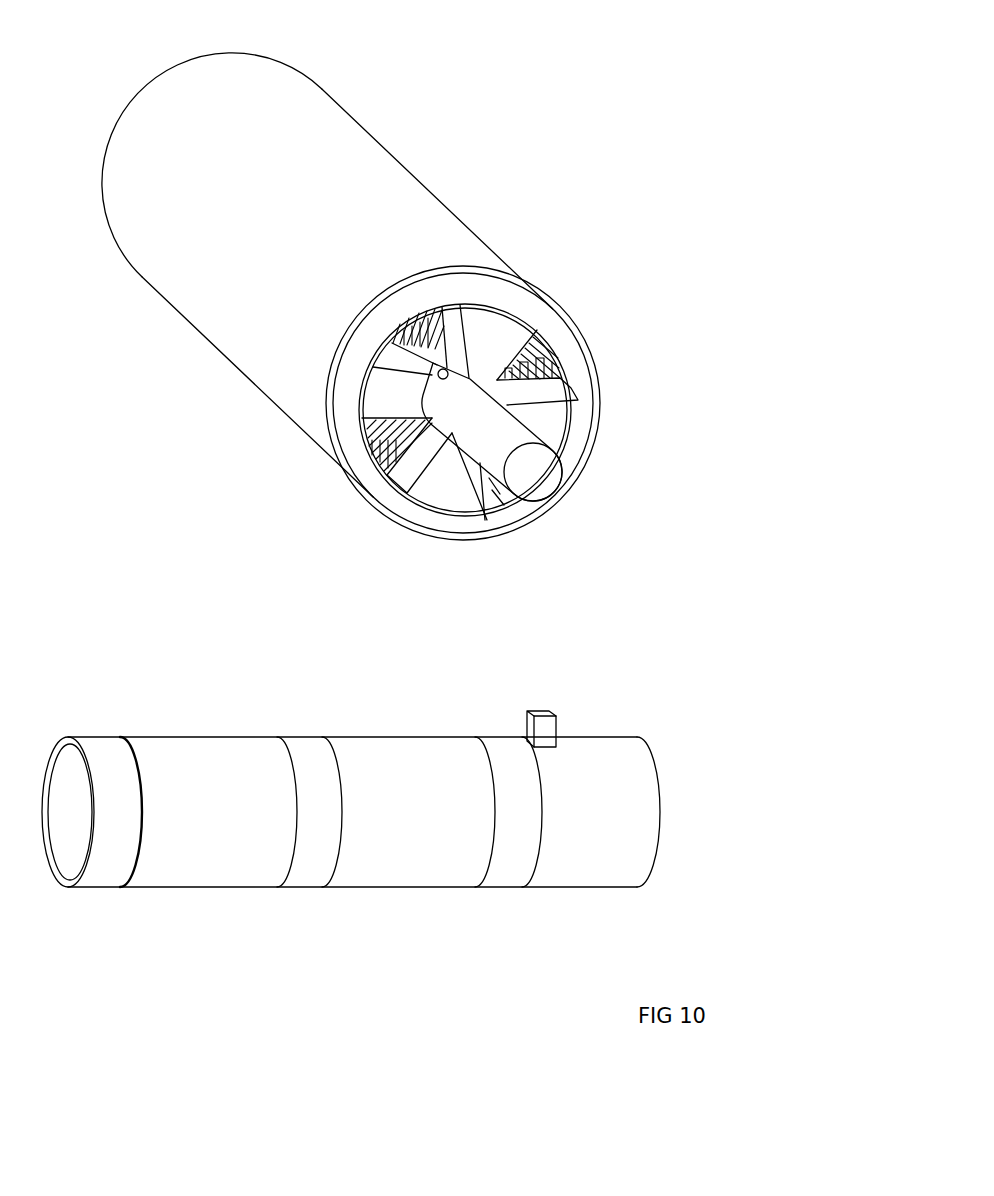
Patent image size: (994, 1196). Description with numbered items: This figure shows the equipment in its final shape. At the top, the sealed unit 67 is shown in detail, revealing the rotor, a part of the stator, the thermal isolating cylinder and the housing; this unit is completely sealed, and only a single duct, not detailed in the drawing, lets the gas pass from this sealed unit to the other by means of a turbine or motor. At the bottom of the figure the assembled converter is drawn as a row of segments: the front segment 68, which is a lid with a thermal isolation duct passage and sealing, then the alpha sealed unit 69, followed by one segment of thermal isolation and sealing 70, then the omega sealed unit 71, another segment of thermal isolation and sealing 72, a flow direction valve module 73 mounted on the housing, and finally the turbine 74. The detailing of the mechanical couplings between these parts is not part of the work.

The sealed unit 67 is at (351, 296).
The front segment 68 is at (100, 750).
The alpha sealed unit 69 is at (208, 748).
The segment of thermal isolation and sealing 70 is at (302, 748).
The omega sealed unit 71 is at (408, 752).
The segment of thermal isolation and sealing 72 is at (503, 748).
The flow direction valve module 73 is at (545, 728).
The turbine 74 is at (618, 757).